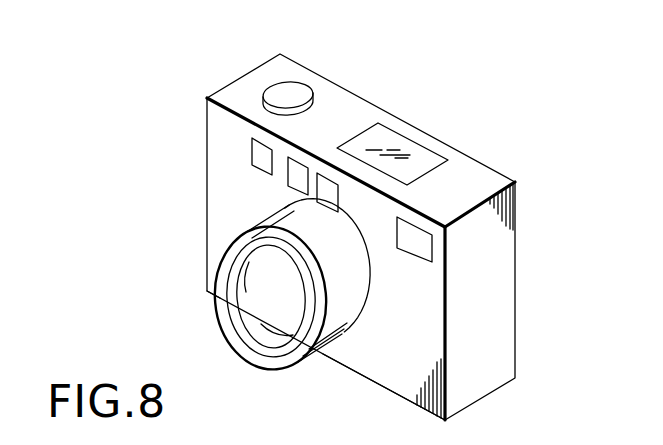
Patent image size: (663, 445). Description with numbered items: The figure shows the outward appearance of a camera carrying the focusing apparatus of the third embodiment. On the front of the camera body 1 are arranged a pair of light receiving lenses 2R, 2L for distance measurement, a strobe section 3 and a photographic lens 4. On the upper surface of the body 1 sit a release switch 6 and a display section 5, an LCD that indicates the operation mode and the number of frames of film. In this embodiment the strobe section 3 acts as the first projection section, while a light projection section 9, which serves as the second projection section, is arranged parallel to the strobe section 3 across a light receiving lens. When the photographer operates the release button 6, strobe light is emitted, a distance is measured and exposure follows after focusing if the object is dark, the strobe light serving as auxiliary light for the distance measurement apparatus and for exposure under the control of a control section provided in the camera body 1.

The camera body 1 is at (490, 168).
The light receiving lens 2R is at (300, 158).
The light receiving lens 2L is at (340, 196).
The strobe section 3 is at (408, 218).
The photographic lens 4 is at (301, 363).
The display section 5 is at (410, 138).
The release switch 6 is at (288, 90).
The light projection section 9 is at (252, 148).